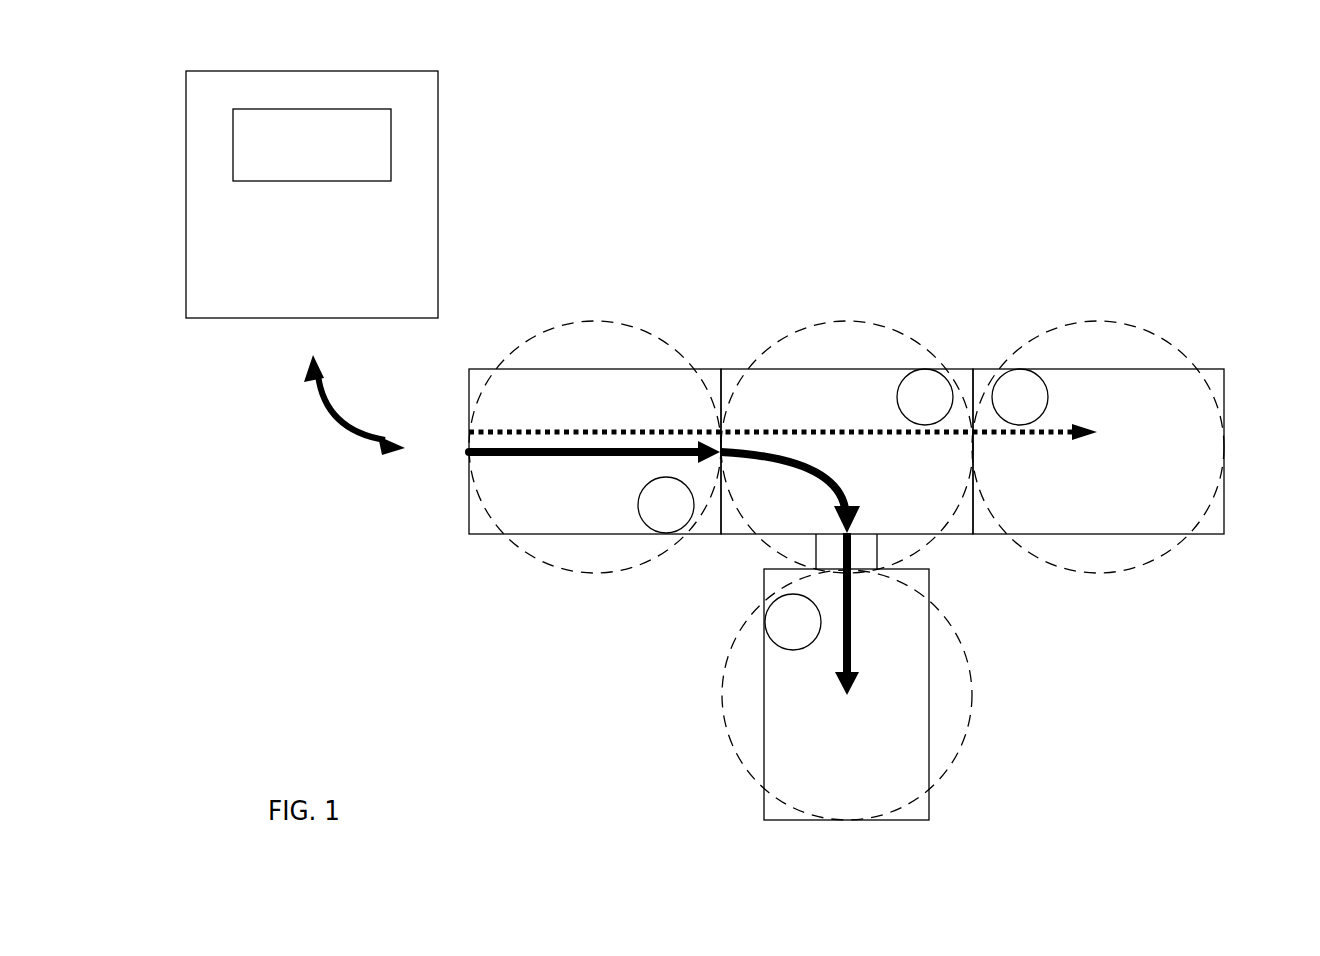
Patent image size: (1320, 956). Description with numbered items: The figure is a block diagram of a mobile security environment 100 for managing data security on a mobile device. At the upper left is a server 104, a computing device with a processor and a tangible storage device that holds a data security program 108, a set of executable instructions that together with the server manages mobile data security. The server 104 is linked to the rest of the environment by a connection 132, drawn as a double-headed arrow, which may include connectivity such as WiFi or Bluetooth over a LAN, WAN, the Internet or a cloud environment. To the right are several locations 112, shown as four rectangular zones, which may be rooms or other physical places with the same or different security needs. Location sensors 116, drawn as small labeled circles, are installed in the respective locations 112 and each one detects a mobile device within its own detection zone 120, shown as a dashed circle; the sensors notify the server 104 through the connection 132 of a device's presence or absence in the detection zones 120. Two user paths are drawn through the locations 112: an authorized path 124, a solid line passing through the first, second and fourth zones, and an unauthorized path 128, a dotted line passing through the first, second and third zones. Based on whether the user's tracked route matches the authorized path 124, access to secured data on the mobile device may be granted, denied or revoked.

The mobile security environment 100 is at (1273, 65).
The server 104 is at (363, 310).
The data security program 108 is at (373, 168).
The locations 112 is at (467, 520).
The location sensors 116 is at (1023, 372).
The detection zones 120 is at (593, 323).
The authorized path 124 is at (838, 683).
The unauthorized path 128 is at (1085, 428).
The connection 132 is at (340, 425).